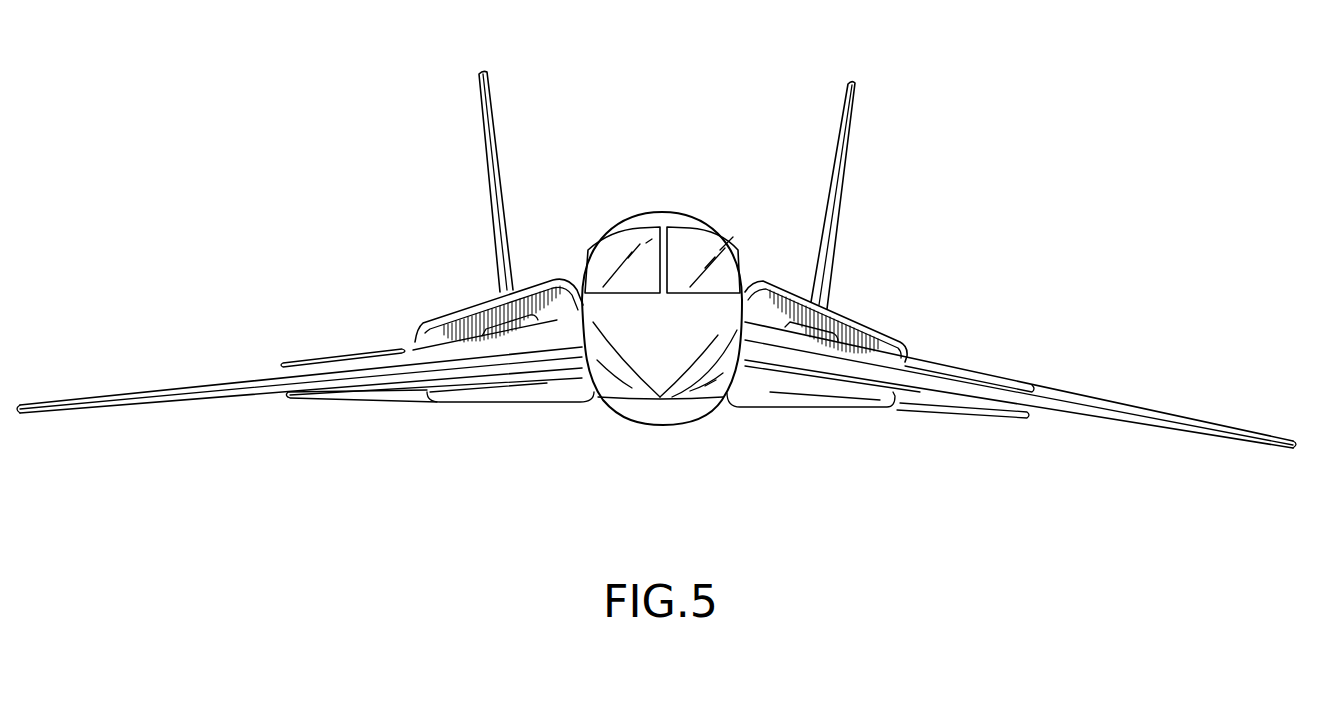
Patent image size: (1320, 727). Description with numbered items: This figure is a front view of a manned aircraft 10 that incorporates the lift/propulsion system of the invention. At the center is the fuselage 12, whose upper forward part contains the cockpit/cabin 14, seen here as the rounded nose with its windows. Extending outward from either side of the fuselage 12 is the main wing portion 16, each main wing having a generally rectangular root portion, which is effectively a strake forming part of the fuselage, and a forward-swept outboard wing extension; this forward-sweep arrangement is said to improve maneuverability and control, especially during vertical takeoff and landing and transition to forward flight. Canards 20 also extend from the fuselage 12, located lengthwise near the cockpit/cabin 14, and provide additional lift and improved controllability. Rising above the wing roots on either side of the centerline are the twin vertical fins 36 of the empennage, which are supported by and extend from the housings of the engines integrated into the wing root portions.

The aircraft 10 is at (656, 309).
The fuselage 12 is at (663, 425).
The cockpit/cabin 14 is at (698, 212).
The main wing portion 16 is at (1137, 398).
The canards 20 is at (958, 422).
The vertical fins 36 is at (491, 93).